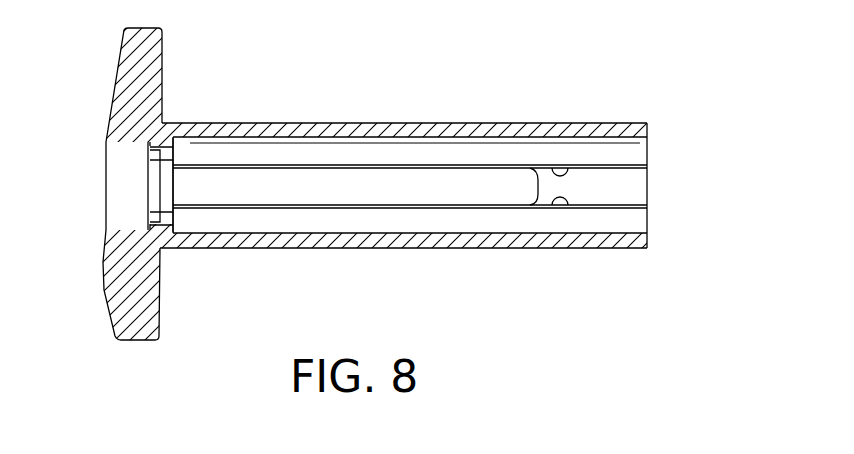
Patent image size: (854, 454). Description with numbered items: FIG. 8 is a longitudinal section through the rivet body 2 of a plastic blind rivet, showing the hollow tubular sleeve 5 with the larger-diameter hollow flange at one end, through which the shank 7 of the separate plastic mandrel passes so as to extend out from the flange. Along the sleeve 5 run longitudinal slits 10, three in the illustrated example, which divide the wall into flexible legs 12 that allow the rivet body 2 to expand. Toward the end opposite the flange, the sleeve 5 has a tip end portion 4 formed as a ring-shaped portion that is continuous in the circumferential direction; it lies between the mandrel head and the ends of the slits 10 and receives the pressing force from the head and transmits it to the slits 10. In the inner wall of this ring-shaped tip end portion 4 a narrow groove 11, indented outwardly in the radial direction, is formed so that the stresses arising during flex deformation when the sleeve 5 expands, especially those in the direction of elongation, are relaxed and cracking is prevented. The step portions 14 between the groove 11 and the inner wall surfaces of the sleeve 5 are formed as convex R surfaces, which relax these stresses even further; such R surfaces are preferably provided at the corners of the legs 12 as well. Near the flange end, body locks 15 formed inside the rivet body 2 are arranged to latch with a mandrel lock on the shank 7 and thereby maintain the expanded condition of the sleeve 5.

The rivet body 2 is at (646, 87).
The tip end portion 4 is at (615, 250).
The sleeve 5 is at (381, 122).
The shank 7 is at (148, 48).
The slits 10 is at (263, 208).
The groove 11 is at (630, 187).
The legs 12 is at (255, 122).
The step portions 14 is at (572, 168).
The body locks 15 is at (157, 163).